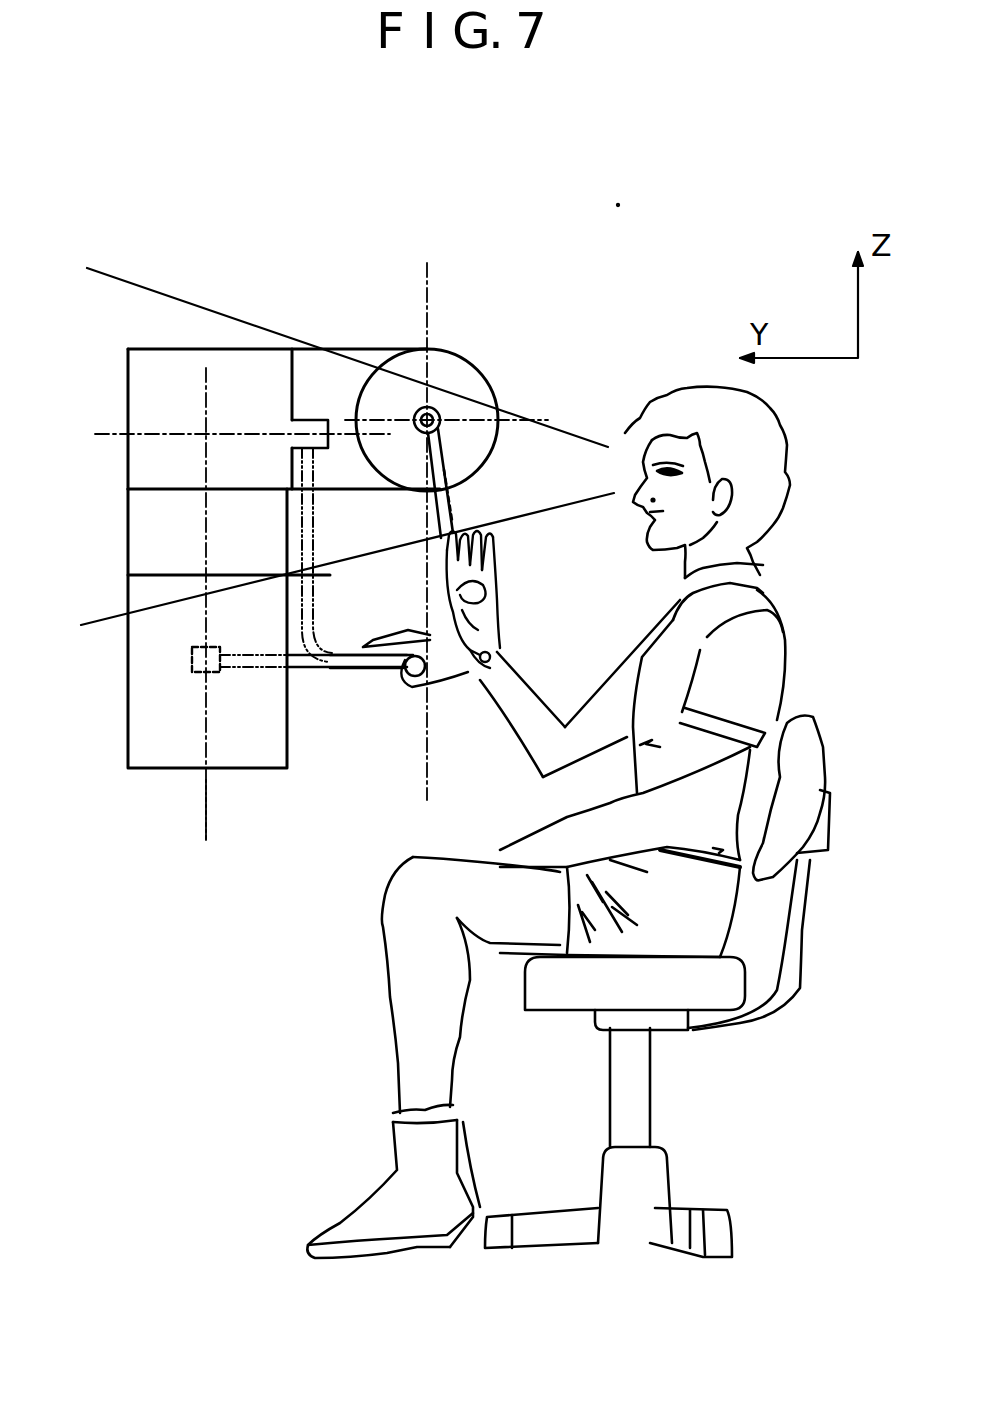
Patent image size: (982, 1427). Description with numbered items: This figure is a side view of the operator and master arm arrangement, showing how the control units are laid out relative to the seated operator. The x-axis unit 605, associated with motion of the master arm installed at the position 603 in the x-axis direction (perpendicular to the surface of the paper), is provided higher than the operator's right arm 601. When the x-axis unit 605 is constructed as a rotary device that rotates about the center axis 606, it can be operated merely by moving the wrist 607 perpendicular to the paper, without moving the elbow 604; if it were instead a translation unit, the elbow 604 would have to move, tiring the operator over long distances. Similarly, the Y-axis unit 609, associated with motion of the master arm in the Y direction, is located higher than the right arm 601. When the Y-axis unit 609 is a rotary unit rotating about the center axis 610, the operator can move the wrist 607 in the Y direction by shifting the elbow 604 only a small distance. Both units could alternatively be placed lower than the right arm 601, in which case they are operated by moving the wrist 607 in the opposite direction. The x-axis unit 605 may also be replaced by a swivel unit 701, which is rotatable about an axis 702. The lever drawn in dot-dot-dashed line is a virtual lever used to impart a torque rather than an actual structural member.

The right arm 601 is at (525, 728).
The position 603 is at (128, 520).
The elbow 604 is at (544, 775).
The x-axis unit 605 is at (128, 353).
The center axis 606 is at (107, 433).
The wrist 607 is at (498, 655).
The Y-axis unit 609 is at (483, 370).
The center axis 610 is at (426, 278).
The swivel unit 701 is at (128, 677).
The axis 702 is at (207, 807).